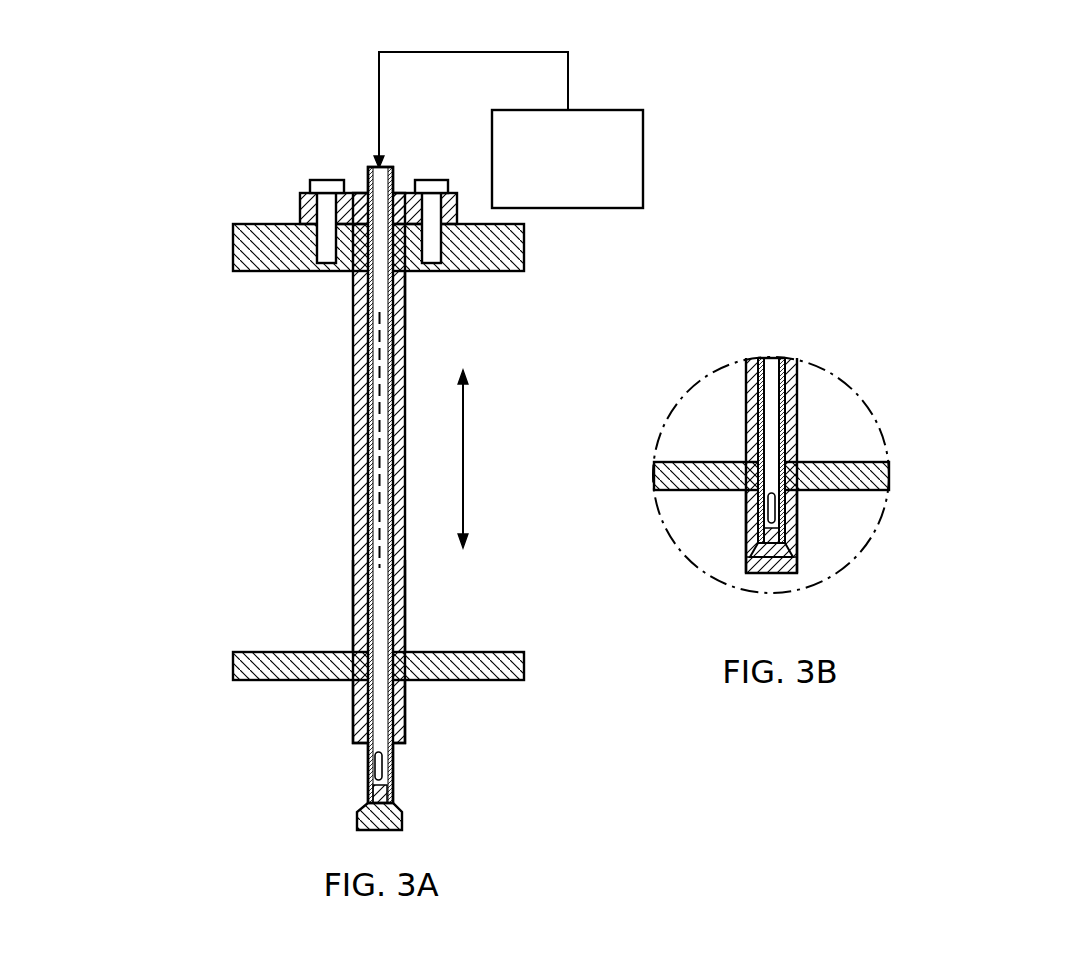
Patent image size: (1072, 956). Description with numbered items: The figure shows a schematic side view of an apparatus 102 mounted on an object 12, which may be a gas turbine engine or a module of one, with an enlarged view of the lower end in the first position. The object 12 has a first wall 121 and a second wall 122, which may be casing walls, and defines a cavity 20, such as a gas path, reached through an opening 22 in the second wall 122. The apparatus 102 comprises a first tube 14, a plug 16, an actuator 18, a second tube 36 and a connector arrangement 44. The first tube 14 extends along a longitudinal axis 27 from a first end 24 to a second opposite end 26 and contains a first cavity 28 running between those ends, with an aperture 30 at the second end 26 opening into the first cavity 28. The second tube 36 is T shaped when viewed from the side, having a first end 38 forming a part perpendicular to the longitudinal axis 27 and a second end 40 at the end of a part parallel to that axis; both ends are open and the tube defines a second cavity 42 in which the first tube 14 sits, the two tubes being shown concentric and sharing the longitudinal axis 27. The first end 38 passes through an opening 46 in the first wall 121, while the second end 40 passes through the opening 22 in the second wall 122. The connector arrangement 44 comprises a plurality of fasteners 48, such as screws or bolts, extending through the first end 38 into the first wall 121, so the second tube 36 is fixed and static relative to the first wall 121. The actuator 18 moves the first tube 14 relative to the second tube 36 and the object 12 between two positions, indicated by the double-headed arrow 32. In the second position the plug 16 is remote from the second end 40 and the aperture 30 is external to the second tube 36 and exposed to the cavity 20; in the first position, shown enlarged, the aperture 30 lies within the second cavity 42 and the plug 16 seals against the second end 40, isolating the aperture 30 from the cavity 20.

In FIG. 3A, the object 12 is at (98, 165).
In FIG. 3A, the first tube 14 is at (383, 781).
In FIG. 3B, the first tube 14 is at (766, 476).
In FIG. 3A, the plug 16 is at (402, 821).
In FIG. 3B, the plug 16 is at (797, 565).
In FIG. 3A, the actuator 18 is at (645, 135).
In FIG. 3A, the cavity 20 is at (482, 728).
In FIG. 3A, the opening 22 is at (418, 637).
In FIG. 3A, the first end 24 is at (349, 171).
In FIG. 3A, the second end 26 is at (429, 817).
In FIG. 3A, the longitudinal axis 27 is at (400, 363).
In FIG. 3A, the first cavity 28 is at (373, 322).
In FIG. 3B, the first cavity 28 is at (771, 360).
In FIG. 3A, the aperture 30 is at (372, 768).
In FIG. 3B, the aperture 30 is at (768, 510).
In FIG. 3A, the axial movement direction 32 is at (464, 433).
In FIG. 3A, the second tube 36 is at (352, 456).
In FIG. 3B, the second tube 36 is at (797, 372).
In FIG. 3A, the first end 38 is at (290, 200).
In FIG. 3A, the second end 40 is at (332, 728).
In FIG. 3B, the second end 40 is at (825, 515).
In FIG. 3A, the second cavity 42 is at (353, 755).
In FIG. 3B, the second cavity 42 is at (770, 408).
In FIG. 3A, the connector arrangement 44 is at (290, 168).
In FIG. 3A, the opening 46 is at (416, 286).
In FIG. 3A, the fasteners 48 is at (430, 185).
In FIG. 3A, the apparatus 102 is at (75, 368).
In FIG. 3B, the apparatus 102 is at (945, 352).
In FIG. 3A, the first wall 121 is at (233, 283).
In FIG. 3A, the second wall 122 is at (232, 640).
In FIG. 3B, the second wall 122 is at (673, 455).